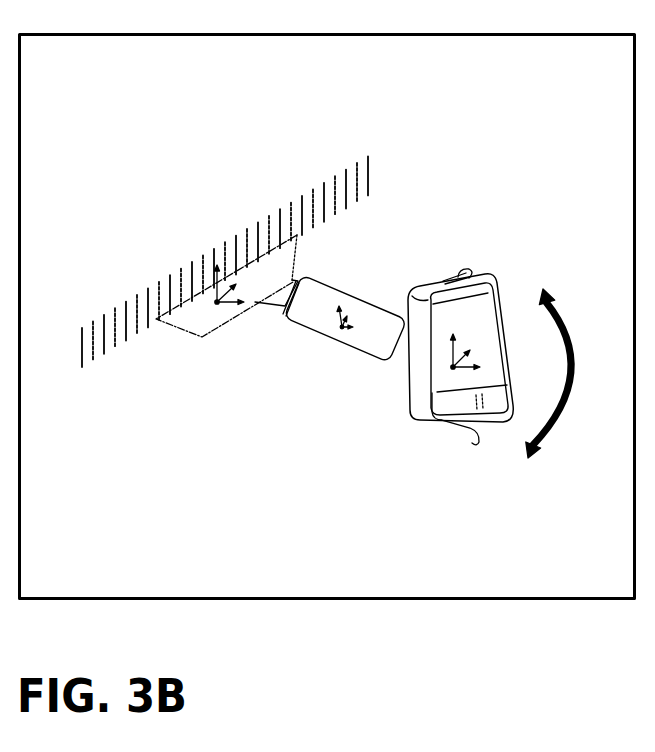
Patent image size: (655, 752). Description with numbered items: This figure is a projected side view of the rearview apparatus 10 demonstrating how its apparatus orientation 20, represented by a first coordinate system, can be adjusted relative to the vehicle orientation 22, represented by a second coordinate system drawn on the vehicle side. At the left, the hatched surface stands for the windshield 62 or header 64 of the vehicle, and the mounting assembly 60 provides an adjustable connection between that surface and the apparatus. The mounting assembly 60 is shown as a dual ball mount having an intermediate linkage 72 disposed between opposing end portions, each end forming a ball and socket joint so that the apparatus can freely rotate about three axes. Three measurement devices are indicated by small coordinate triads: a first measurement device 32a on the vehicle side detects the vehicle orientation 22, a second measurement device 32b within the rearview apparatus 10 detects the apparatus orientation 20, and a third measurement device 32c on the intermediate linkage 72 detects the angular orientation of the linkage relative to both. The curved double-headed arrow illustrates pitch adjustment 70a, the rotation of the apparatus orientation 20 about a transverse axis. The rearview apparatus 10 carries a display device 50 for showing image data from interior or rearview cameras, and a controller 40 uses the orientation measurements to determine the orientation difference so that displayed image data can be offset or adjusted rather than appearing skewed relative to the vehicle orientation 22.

The rearview apparatus 10 is at (507, 143).
The apparatus orientation 20 is at (453, 367).
The vehicle orientation 22 is at (217, 302).
The first measurement device 32a is at (230, 285).
The second measurement device 32b is at (466, 352).
The third measurement device 32c is at (342, 327).
The controller 40 is at (427, 368).
The display device 50 is at (481, 256).
The mounting assembly 60 is at (280, 351).
The windshield 62 is at (300, 210).
The header 64 is at (225, 261).
The pitch adjustment 70a is at (575, 355).
The intermediate linkage 72 is at (317, 292).